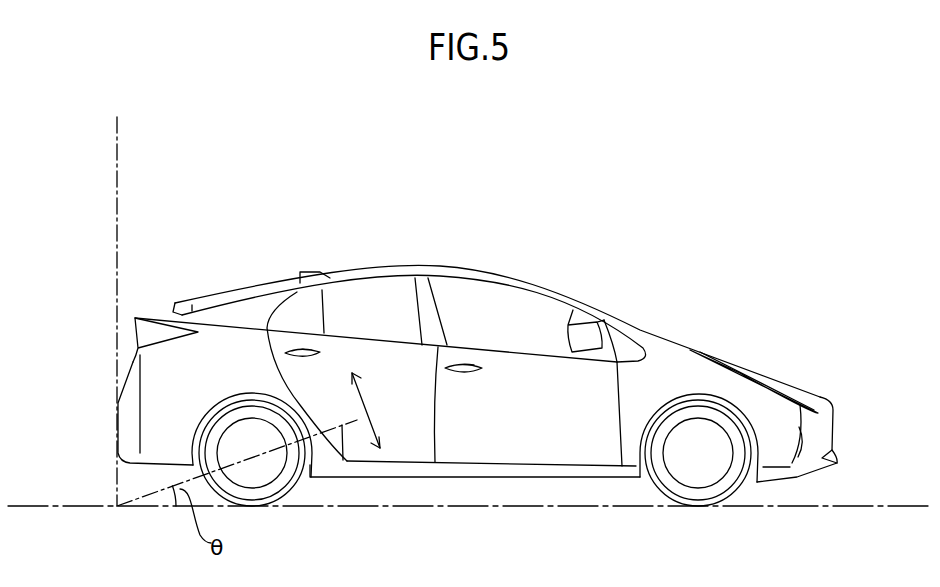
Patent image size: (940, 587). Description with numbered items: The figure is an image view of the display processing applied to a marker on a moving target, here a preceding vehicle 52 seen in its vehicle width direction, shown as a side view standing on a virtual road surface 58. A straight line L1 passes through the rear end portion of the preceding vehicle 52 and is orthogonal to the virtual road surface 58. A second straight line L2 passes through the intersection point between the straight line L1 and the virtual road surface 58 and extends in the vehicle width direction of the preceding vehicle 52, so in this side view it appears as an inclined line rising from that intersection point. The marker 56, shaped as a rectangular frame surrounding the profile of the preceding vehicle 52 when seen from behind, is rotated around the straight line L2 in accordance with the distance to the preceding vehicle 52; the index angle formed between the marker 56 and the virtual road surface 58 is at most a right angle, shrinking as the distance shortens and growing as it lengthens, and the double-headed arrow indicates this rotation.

The preceding vehicle 52 is at (670, 357).
The marker 56 is at (350, 462).
The virtual road surface 58 is at (850, 506).
The straight line L1 is at (119, 138).
The straight line L2 is at (117, 508).